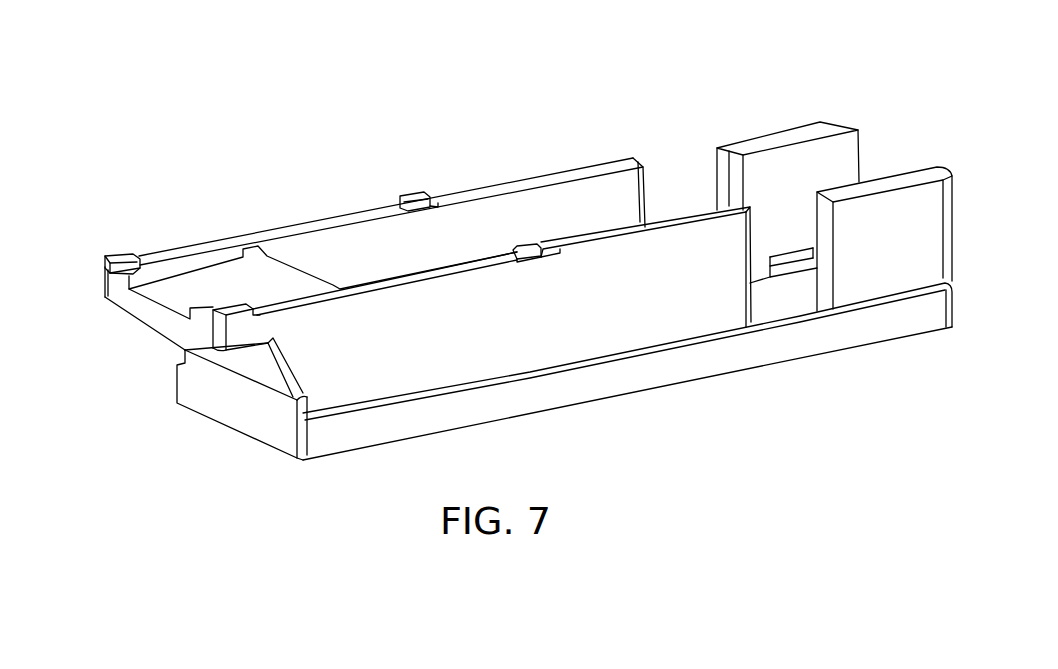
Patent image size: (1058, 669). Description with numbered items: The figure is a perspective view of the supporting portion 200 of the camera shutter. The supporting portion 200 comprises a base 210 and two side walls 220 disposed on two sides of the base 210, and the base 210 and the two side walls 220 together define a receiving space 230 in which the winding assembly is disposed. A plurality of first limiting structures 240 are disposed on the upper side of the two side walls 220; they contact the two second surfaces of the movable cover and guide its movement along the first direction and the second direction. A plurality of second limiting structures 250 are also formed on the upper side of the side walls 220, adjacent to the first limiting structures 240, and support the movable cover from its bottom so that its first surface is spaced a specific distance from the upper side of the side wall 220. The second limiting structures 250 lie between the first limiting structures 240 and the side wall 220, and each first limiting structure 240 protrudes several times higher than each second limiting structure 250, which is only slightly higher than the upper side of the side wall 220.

The supporting portion 200 is at (306, 64).
The base 210 is at (672, 373).
The side walls 220 is at (329, 250).
The receiving space 230 is at (680, 203).
The first limiting structures 240 is at (117, 256).
The second limiting structures 250 is at (112, 275).